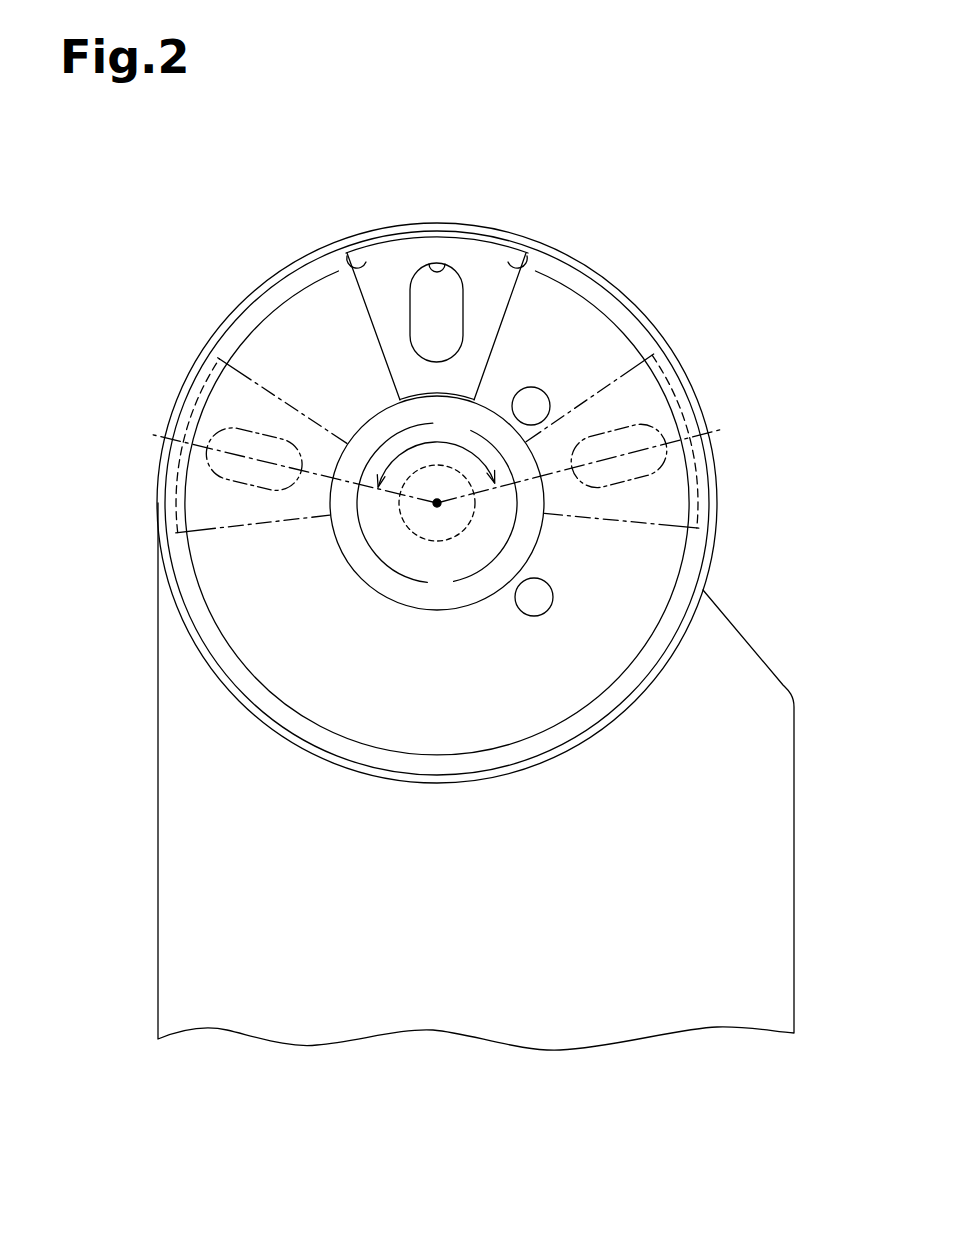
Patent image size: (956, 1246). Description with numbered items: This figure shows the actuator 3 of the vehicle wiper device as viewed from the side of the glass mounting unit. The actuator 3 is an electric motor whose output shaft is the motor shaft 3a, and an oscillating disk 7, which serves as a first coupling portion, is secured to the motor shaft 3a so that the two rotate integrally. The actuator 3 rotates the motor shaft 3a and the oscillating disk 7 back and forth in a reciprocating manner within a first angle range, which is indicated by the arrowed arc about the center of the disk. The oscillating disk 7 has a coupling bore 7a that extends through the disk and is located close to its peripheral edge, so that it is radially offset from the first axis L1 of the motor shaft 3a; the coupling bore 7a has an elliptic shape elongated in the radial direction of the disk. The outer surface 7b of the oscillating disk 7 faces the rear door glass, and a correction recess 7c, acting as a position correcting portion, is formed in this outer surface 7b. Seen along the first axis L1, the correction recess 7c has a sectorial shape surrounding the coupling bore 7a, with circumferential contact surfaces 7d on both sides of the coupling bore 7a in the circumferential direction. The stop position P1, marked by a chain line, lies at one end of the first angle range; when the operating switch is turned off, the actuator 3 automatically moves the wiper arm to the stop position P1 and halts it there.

The actuator 3 is at (146, 641).
The motor shaft 3a is at (410, 530).
The oscillating disk 7 is at (578, 258).
The coupling bore 7a is at (441, 265).
The outer surface 7b is at (306, 292).
The correction recess 7c is at (385, 270).
The circumferential contact surfaces 7d is at (352, 250).
The stop position P1 is at (713, 432).
The first axis L1 is at (437, 505).